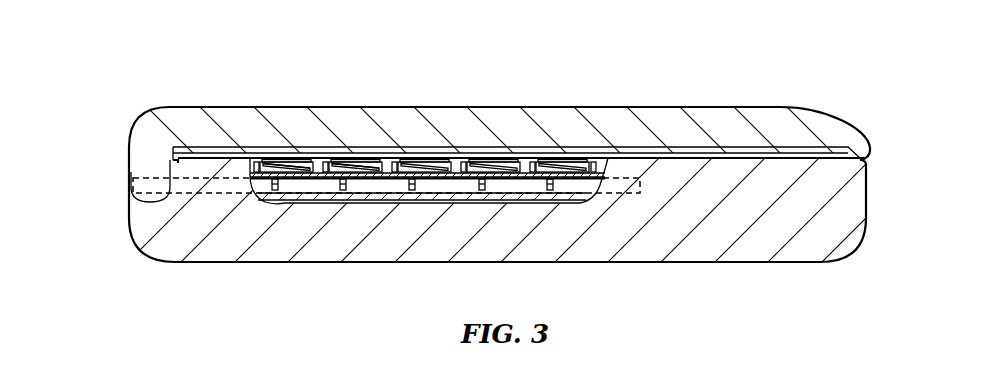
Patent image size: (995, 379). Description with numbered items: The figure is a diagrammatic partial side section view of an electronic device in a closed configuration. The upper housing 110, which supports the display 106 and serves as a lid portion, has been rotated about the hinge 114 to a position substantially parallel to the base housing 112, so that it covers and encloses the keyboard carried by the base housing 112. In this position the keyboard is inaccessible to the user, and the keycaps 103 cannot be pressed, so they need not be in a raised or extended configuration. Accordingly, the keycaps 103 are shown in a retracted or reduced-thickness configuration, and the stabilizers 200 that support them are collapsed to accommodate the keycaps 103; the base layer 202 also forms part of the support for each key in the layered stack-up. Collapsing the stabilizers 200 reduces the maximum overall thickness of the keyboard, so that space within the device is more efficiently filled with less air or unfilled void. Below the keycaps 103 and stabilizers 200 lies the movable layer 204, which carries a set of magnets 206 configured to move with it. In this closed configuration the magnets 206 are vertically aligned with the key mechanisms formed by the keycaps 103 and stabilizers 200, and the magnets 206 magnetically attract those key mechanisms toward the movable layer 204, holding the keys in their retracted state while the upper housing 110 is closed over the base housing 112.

The keycaps 103 is at (289, 158).
The display 106 is at (695, 155).
The upper housing 110 is at (793, 118).
The base housing 112 is at (857, 205).
The hinge 114 is at (153, 167).
The stabilizer 200 is at (490, 167).
The base layer 202 is at (632, 167).
The movable layer 204 is at (585, 187).
The magnets 206 is at (482, 190).